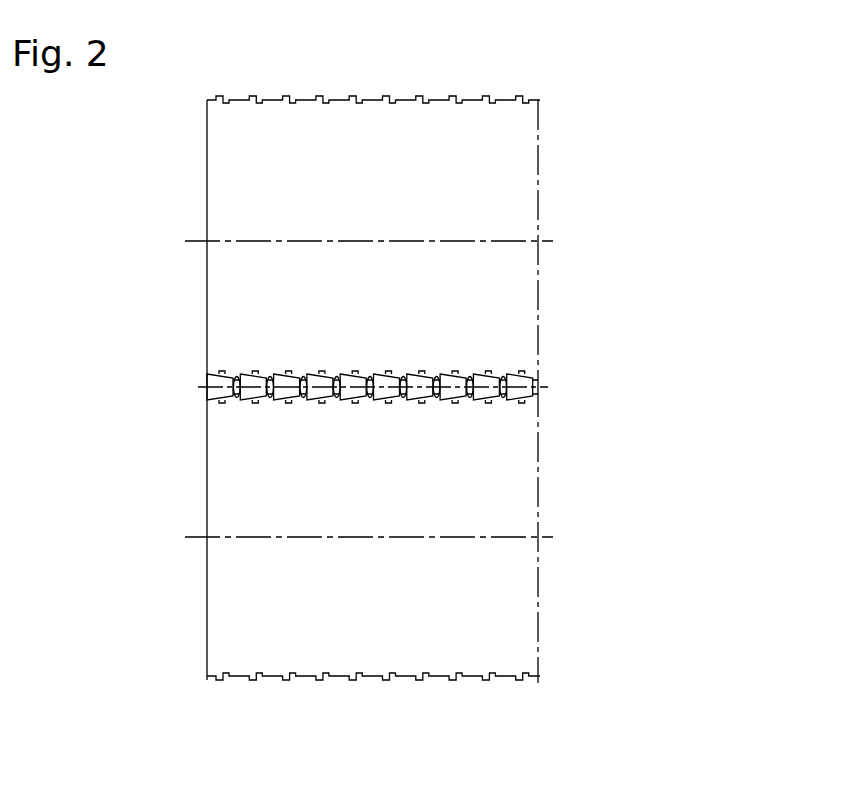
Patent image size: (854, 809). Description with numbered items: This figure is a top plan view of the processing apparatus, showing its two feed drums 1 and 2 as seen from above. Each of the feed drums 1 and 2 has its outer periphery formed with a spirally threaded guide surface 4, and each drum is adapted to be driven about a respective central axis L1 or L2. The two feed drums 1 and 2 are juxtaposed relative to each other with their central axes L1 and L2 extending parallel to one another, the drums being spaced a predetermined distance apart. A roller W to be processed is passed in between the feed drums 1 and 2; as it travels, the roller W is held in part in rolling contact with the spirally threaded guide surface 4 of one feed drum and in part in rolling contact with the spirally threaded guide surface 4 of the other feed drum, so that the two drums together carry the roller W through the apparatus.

The feed drum 1 is at (232, 586).
The feed drum 2 is at (240, 180).
The spirally threaded guide surface 4 is at (210, 383).
The roller W is at (540, 387).
The central axis L1 is at (545, 537).
The central axis L2 is at (550, 241).